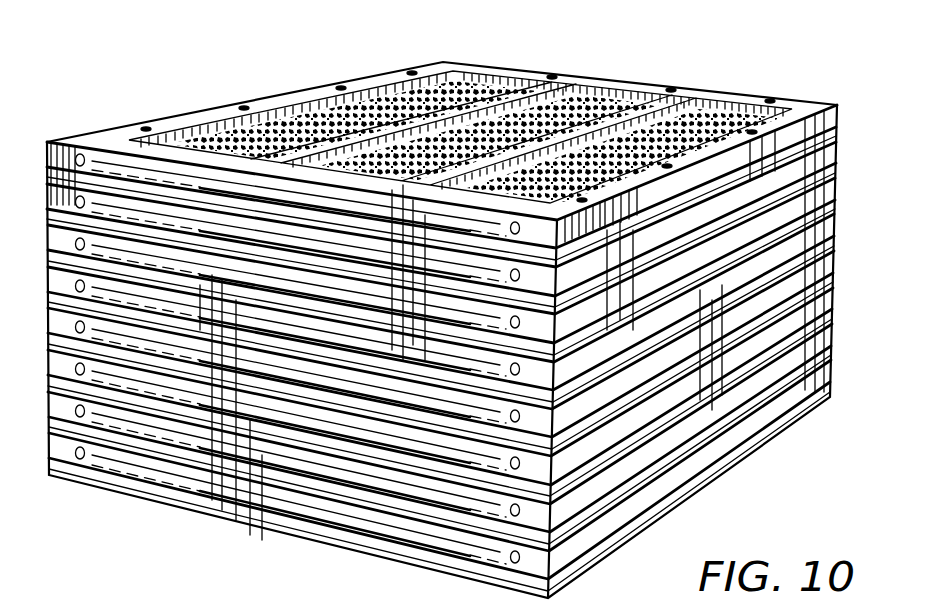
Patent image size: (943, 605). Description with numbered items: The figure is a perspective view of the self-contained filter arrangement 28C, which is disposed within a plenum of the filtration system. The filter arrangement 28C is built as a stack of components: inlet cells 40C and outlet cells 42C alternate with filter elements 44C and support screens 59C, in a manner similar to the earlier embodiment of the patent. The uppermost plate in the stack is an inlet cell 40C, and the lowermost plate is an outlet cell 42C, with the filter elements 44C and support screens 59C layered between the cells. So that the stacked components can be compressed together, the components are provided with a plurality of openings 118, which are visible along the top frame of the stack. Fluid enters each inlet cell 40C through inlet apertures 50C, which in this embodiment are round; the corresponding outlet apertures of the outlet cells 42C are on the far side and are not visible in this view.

The filter arrangement 28C is at (442, 306).
The inlet cell 40C is at (70, 143).
The filter element 44C is at (190, 187).
The openings 118 is at (400, 70).
The outlet cell 42C is at (157, 490).
The support screen 59C is at (357, 532).
The inlet aperture 50C is at (500, 556).